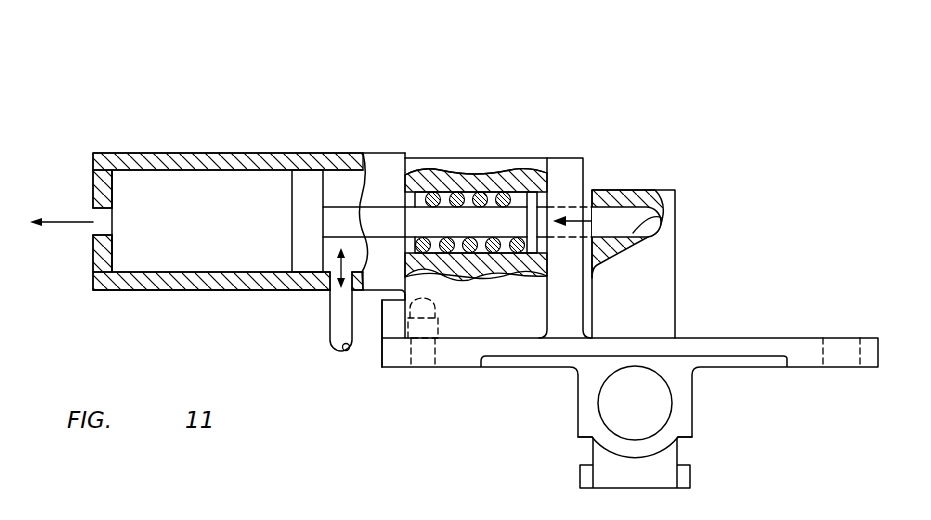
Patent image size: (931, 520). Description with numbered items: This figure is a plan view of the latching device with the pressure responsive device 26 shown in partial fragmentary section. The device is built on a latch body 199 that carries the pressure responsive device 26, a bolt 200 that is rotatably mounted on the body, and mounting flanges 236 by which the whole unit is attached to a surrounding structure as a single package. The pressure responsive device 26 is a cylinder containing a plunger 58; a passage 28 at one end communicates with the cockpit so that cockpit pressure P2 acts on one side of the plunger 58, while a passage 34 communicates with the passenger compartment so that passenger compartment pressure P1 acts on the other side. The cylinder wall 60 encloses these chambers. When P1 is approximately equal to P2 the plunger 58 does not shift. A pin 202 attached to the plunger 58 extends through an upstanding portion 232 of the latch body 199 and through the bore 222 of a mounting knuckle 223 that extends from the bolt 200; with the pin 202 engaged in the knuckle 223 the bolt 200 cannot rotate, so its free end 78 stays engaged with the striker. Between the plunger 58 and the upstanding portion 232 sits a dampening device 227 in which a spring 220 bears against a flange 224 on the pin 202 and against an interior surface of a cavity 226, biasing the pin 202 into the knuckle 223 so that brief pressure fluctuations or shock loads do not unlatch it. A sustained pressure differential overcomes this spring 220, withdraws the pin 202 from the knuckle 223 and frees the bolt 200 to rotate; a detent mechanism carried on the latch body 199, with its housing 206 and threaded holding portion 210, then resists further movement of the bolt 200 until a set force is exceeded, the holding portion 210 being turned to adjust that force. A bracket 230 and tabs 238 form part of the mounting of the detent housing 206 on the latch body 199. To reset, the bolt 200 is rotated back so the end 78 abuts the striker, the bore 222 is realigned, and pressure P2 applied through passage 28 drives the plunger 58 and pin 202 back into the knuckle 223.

The pressure responsive device 26 is at (137, 155).
The passage 28 is at (92, 213).
The cockpit pressure P2 is at (247, 193).
The plunger 58 is at (326, 186).
The passenger compartment pressure P1 is at (353, 180).
The cylinder wall 60 is at (200, 292).
The passage 34 is at (330, 317).
The dampening device 227 is at (443, 157).
The cavity 226 is at (418, 191).
The spring 220 is at (481, 192).
The flange 224 is at (531, 191).
The upstanding portion 232 is at (565, 168).
The bolt 200 is at (677, 272).
The pin 202 is at (620, 210).
The bore 222 is at (645, 231).
The mounting knuckle 223 is at (653, 253).
The latch body 199 is at (697, 322).
The mounting flanges 236 is at (870, 337).
The bracket 230 is at (380, 367).
The holding portion 210 is at (614, 392).
The housing 206 is at (690, 378).
The tabs 238 is at (576, 432).
The free end 78 is at (657, 483).